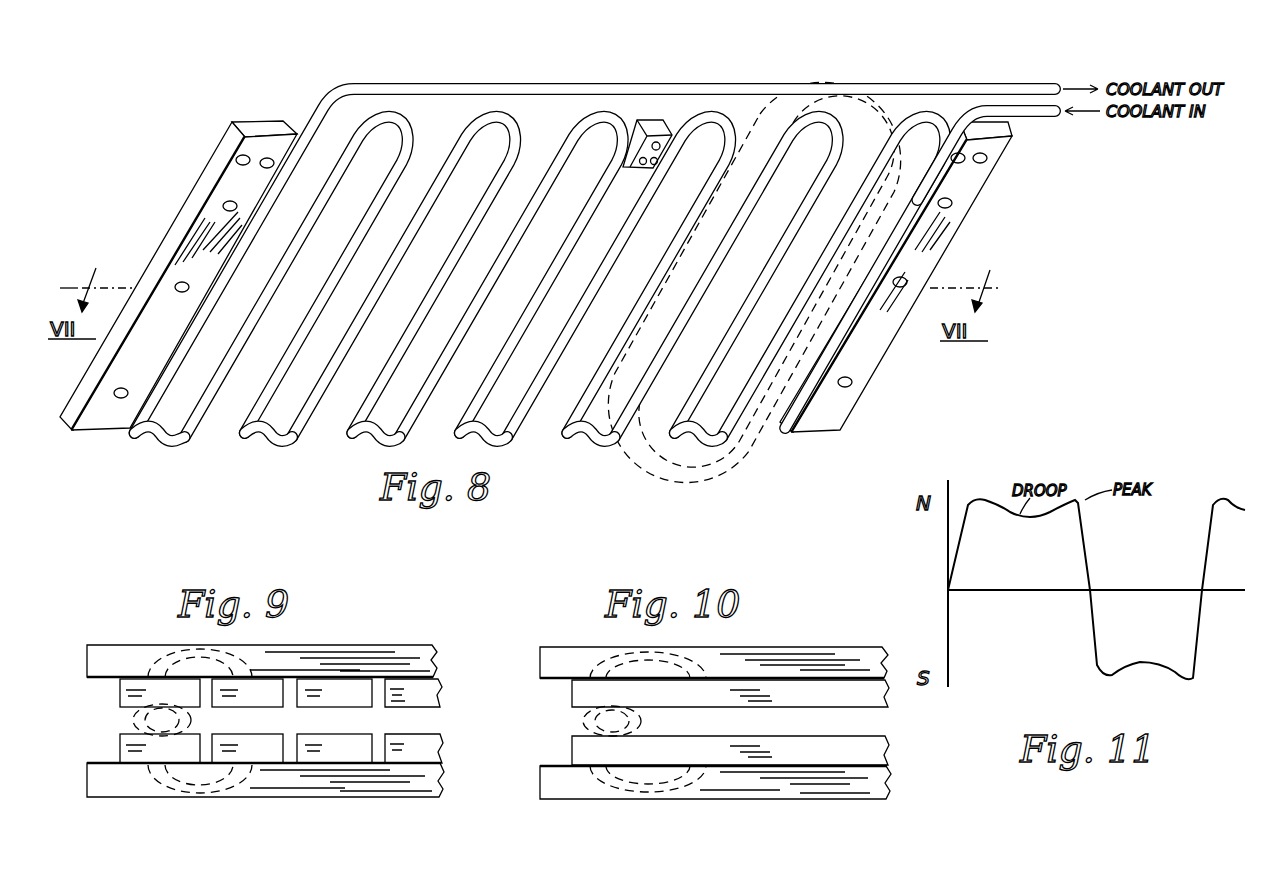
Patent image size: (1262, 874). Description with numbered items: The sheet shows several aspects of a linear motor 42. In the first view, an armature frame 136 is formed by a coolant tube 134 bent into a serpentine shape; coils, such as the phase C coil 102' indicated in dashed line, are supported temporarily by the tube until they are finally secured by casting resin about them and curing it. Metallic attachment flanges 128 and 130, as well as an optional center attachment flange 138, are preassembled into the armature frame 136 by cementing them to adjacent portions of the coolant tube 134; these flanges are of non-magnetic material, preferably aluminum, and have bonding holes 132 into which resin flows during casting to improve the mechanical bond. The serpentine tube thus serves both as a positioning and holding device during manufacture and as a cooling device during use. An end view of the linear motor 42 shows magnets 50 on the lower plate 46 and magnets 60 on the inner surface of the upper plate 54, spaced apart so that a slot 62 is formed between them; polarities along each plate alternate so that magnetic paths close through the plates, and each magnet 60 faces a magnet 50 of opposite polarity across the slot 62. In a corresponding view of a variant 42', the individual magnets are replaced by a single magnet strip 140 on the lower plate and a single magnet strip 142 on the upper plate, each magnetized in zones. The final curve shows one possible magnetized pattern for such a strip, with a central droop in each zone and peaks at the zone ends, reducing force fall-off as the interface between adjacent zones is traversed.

In FIG. 8, the metallic attachment flange 128 is at (215, 222).
In FIG. 8, the metallic attachment flange 130 is at (970, 178).
In FIG. 8, the bonding hole 132 is at (124, 387).
In FIG. 8, the coolant tube 134 is at (303, 412).
In FIG. 8, the armature frame 136 is at (318, 80).
In FIG. 8, the center attachment flange 138 is at (650, 119).
In FIG. 8, the phase C coil 102' is at (754, 282).
In FIG. 9, the linear motor 42 is at (327, 680).
In FIG. 10, the alternative magnet assembly 42' is at (808, 616).
In FIG. 9, the lower plate 46 is at (90, 780).
In FIG. 10, the lower plate 46 is at (560, 780).
In FIG. 9, the magnets 50 is at (126, 751).
In FIG. 9, the upper plate 54 is at (106, 652).
In FIG. 10, the upper plate 54 is at (560, 656).
In FIG. 9, the magnets 60 is at (88, 669).
In FIG. 9, the slot 62 is at (420, 724).
In FIG. 10, the slot 62 is at (826, 724).
In FIG. 10, the magnet strip 140 is at (576, 752).
In FIG. 10, the magnet strip 142 is at (573, 692).